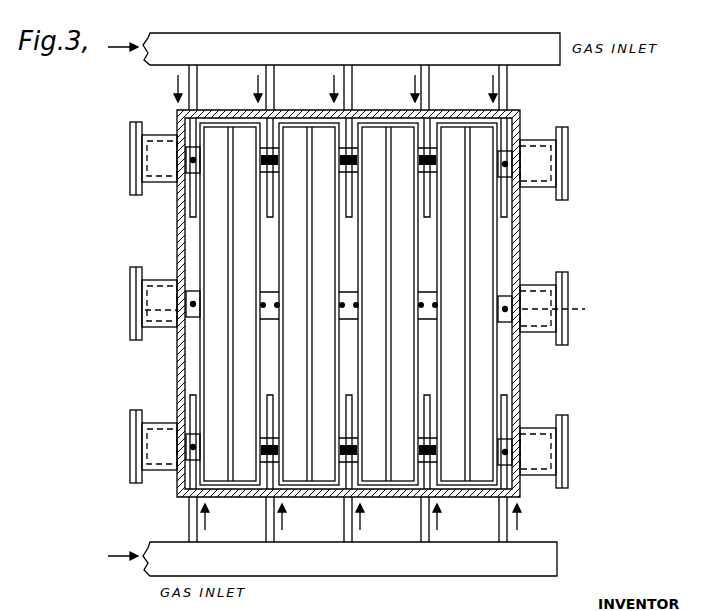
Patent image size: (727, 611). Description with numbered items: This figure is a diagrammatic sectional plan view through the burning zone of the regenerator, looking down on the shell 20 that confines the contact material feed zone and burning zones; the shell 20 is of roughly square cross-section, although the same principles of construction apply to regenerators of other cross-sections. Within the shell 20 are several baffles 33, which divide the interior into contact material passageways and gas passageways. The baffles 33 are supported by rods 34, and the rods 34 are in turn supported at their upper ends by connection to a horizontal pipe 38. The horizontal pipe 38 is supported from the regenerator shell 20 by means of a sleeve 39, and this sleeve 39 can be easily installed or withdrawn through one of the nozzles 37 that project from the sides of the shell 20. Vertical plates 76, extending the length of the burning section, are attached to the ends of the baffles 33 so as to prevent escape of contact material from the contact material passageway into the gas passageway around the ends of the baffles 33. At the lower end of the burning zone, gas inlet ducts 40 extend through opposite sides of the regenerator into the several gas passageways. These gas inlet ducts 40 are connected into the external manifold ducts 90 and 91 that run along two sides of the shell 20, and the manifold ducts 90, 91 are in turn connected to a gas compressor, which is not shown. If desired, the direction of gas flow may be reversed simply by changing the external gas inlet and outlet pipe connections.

The external manifold duct 91 is at (203, 34).
The external manifold duct 90 is at (408, 574).
The shell 20 is at (470, 121).
The baffles 33 is at (397, 124).
The rods 34 is at (356, 302).
The nozzles 37 is at (156, 136).
The horizontal pipe 38 is at (196, 125).
The sleeve 39 is at (145, 310).
The gas inlet ducts 40 is at (268, 218).
The vertical plates 76 is at (303, 123).